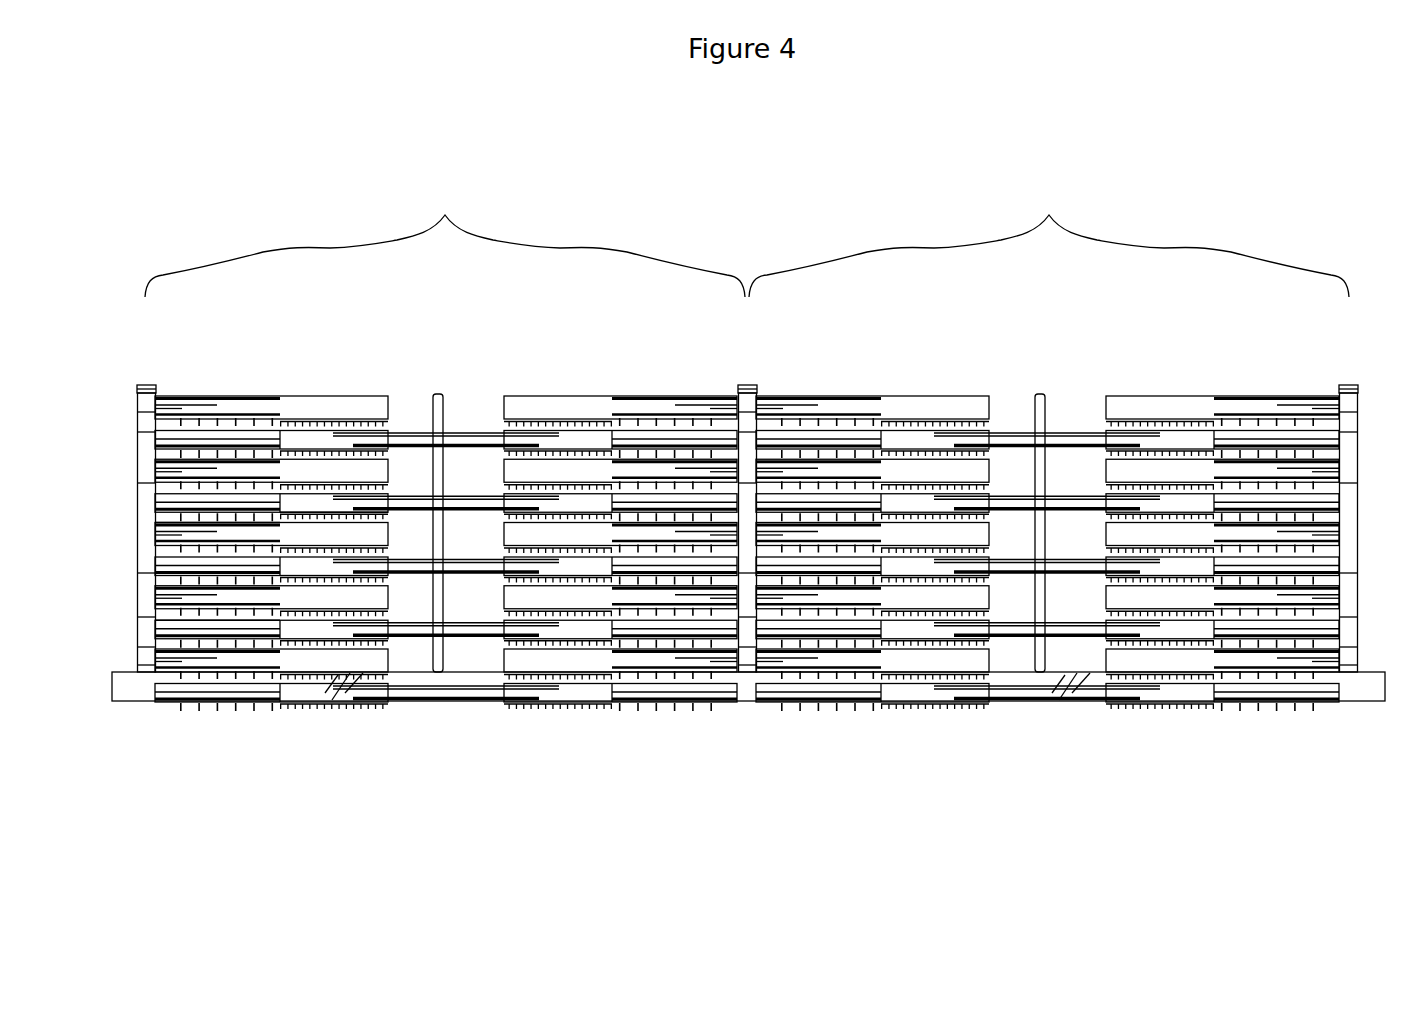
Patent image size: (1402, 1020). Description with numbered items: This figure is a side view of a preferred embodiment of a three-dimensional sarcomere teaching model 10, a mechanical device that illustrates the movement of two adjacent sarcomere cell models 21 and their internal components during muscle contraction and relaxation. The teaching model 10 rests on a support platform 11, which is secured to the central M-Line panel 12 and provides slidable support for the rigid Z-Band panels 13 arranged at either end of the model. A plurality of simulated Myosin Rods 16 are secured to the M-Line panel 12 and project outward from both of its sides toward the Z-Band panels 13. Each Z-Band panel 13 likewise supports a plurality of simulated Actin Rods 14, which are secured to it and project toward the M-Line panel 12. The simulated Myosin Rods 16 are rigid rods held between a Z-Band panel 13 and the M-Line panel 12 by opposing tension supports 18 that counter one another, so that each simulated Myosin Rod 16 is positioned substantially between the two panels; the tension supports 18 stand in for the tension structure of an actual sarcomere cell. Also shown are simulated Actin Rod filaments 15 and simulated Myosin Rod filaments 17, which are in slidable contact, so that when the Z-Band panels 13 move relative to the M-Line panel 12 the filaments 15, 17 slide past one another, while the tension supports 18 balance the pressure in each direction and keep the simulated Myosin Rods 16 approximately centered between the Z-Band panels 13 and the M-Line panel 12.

The teaching model 10 is at (1071, 822).
The support platform 11 is at (532, 690).
The M-Line panel 12 is at (435, 393).
The Z-Band panel 13 is at (146, 387).
The simulated Actin Rod 14 is at (253, 398).
The simulated Actin Rod filament 15 is at (172, 519).
The simulated Myosin Rod 16 is at (459, 432).
The simulated Myosin Rod filament 17 is at (376, 514).
The tension support 18 is at (200, 622).
The sarcomere cell model 21 is at (747, 232).